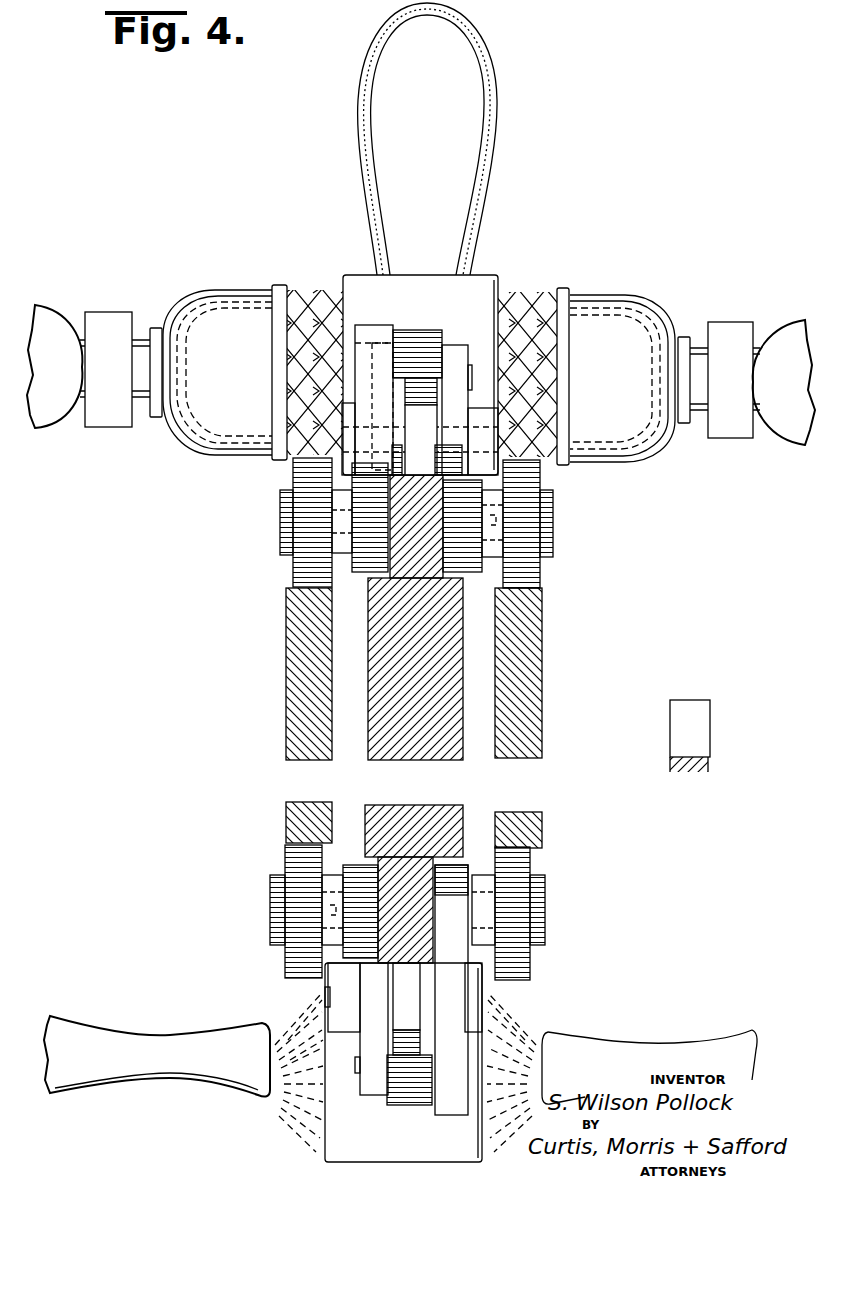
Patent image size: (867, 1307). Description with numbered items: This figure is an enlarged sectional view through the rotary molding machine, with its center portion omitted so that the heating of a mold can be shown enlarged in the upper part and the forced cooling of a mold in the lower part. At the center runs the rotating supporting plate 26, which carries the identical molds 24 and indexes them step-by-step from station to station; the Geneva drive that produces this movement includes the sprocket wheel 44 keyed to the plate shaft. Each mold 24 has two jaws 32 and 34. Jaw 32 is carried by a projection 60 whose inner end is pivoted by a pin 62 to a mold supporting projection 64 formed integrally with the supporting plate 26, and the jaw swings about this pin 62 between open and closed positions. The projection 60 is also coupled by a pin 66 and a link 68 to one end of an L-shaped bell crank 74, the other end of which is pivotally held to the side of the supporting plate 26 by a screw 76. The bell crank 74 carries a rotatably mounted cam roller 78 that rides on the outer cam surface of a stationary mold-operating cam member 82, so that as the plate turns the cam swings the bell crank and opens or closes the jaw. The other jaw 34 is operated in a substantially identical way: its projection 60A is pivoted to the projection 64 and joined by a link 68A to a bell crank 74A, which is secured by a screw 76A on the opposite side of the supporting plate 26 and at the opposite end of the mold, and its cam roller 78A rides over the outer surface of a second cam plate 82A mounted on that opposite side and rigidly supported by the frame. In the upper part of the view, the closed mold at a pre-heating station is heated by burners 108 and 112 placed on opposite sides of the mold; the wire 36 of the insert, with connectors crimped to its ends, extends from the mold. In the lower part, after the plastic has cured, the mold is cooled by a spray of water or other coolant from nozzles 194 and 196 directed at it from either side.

The mold 24 is at (361, 266).
The supporting plate 26 is at (401, 725).
The mold jaw 32 is at (455, 1148).
The mold jaw 34 is at (416, 282).
The wire 36 is at (492, 62).
The sprocket wheel 44 is at (705, 762).
The projection 60 is at (373, 1080).
The projection 60A is at (457, 360).
The pin 62 is at (324, 995).
The mold supporting projection 64 is at (418, 462).
The pin 66 is at (357, 1073).
The link 68 is at (412, 1090).
The link 68A is at (422, 343).
The bell crank 74 is at (462, 528).
The bell crank 74A is at (372, 548).
The screw 76 is at (490, 548).
The screw 76A is at (340, 873).
The cam roller 78 is at (525, 496).
The cam roller 78A is at (311, 496).
The mold-operating cam member 82 is at (527, 745).
The cam plate 82A is at (296, 744).
The burner 108 is at (232, 298).
The burner 112 is at (608, 305).
The nozzle 194 is at (606, 1048).
The nozzle 196 is at (215, 1045).